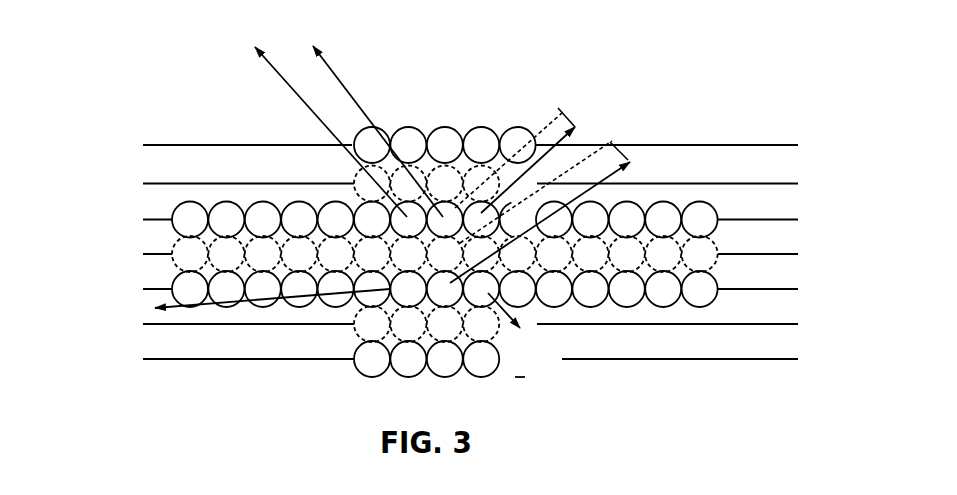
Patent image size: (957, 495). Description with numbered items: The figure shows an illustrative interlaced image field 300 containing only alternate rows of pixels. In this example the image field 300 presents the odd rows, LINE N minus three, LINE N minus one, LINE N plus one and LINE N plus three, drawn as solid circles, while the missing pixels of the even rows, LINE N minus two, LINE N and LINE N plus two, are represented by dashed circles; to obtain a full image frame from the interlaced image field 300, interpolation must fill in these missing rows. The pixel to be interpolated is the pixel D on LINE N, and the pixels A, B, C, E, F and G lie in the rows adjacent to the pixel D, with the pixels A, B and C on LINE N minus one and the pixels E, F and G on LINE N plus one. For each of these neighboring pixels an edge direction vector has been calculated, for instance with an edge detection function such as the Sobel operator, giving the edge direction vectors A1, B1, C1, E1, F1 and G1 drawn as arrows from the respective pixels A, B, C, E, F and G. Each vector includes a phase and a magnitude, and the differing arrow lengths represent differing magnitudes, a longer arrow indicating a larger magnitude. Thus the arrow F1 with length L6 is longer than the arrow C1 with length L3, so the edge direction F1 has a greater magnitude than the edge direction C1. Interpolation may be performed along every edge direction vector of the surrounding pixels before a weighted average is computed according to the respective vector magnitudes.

The interlaced image field 300 is at (702, 98).
The pixel A is at (408, 220).
The pixel B is at (445, 220).
The pixel C is at (481, 220).
The pixel to be interpolated D is at (445, 254).
The pixel E is at (408, 289).
The pixel F is at (445, 289).
The pixel G is at (481, 289).
The edge direction vector A1 is at (317, 126).
The edge direction vector B1 is at (378, 126).
The edge direction vector C1 is at (544, 159).
The edge direction vector E1 is at (260, 303).
The edge direction vector F1 is at (555, 217).
The edge direction vector G1 is at (516, 329).
The length of arrow C1 L3 is at (515, 158).
The length of arrow F1 L6 is at (544, 192).